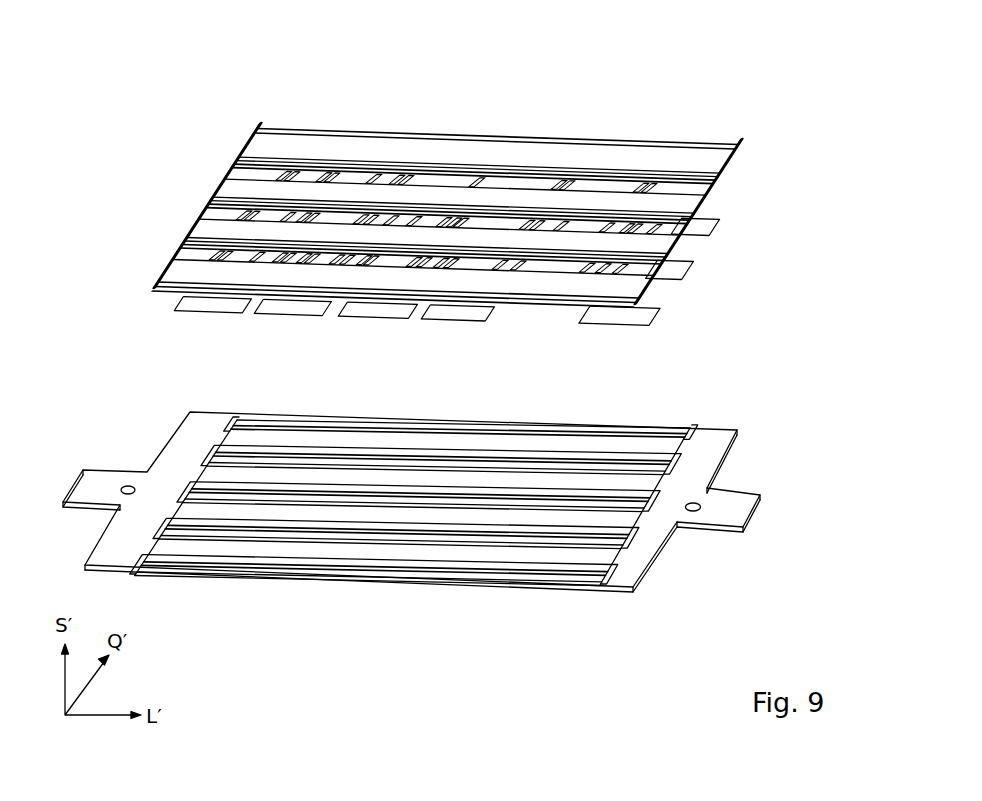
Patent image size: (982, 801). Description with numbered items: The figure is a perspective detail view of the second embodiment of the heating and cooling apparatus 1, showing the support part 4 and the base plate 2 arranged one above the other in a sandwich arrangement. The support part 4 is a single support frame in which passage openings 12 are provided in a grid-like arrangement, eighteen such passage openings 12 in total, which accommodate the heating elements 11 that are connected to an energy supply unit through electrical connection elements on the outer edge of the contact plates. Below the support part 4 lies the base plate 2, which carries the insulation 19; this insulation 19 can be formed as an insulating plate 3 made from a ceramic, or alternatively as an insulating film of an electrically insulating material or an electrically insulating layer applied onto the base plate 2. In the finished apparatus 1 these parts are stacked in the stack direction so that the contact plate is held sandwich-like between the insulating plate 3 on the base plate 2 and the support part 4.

The heating and cooling apparatus 1 is at (771, 114).
The support part 4 is at (643, 126).
The passage openings 12 is at (273, 171).
The heating elements 11 is at (218, 303).
The base plate 2 is at (660, 565).
The insulating plate 3 is at (414, 531).
The insulation 19 is at (302, 566).